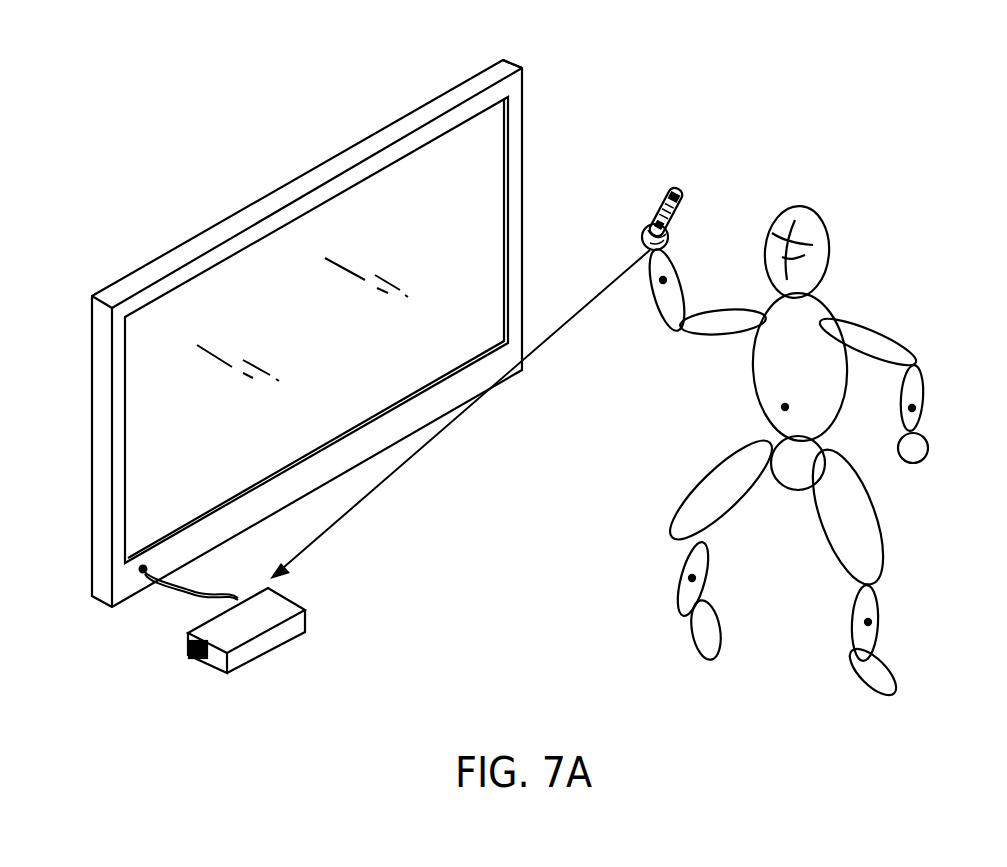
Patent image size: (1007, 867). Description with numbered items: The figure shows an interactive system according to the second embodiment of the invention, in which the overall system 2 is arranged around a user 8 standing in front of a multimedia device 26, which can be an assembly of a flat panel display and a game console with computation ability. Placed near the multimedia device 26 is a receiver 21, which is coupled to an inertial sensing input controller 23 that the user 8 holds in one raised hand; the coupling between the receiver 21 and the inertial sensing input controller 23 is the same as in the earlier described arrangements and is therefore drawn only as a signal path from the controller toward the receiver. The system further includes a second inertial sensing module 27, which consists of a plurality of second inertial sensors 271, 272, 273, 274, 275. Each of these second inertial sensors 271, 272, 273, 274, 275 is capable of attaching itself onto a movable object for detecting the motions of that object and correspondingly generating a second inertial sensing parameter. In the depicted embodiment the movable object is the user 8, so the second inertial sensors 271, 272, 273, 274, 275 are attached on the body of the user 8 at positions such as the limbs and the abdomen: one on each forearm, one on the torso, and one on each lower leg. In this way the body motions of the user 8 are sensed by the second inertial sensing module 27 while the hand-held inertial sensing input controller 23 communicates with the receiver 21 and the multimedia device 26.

The display device 2 is at (258, 158).
The multimedia device 26 is at (506, 70).
The receiver 21 is at (262, 642).
The inertial sensing input controller 23 is at (655, 182).
The user 8 is at (815, 222).
The second inertial sensing module 27 is at (768, 407).
The second inertial sensor 271 is at (665, 279).
The second inertial sensor 272 is at (914, 408).
The second inertial sensor 273 is at (787, 407).
The second inertial sensor 274 is at (694, 578).
The second inertial sensor 275 is at (870, 622).